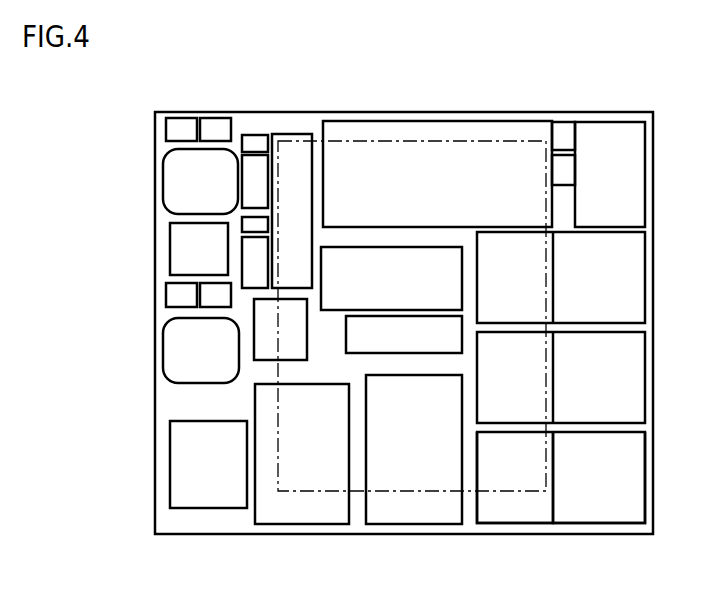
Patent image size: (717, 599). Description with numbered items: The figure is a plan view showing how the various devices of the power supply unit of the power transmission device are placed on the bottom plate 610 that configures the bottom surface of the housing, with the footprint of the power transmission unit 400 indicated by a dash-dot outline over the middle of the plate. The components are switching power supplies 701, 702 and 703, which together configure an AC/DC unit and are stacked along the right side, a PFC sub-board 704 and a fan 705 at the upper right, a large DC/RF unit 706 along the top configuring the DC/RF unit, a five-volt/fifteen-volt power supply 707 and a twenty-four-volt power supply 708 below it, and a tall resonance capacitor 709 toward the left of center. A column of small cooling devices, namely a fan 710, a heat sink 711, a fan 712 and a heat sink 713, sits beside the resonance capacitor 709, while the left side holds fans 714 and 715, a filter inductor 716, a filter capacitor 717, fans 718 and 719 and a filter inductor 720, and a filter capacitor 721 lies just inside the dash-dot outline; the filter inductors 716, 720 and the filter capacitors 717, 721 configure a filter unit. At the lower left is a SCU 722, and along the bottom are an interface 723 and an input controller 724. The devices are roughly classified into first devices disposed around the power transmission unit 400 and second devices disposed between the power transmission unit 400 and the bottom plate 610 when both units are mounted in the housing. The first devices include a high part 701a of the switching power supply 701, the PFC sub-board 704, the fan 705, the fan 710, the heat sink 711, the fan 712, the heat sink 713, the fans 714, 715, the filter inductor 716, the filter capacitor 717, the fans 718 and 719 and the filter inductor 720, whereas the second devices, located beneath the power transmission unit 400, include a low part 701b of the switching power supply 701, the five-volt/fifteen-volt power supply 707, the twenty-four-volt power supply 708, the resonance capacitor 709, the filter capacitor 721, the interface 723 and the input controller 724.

The power transmission unit 400 is at (465, 468).
The bottom plate 610 is at (613, 114).
The switching power supply 701 is at (620, 480).
The high part of switching power supply 701a is at (617, 505).
The low part of switching power supply 701b is at (541, 507).
The switching power supply 702 is at (620, 378).
The switching power supply 703 is at (620, 276).
The PFC sub-board 704 is at (620, 175).
The fan 705 is at (562, 132).
The DC/RF unit 706 is at (469, 157).
The 5V/15V power supply 707 is at (410, 278).
The 24V power supply 708 is at (377, 338).
The resonance capacitor 709 is at (293, 155).
The fan 710 is at (257, 143).
The heat sink 711 is at (257, 190).
The fan 712 is at (257, 226).
The heat sink 713 is at (257, 262).
The fan 714 is at (213, 128).
The fan 715 is at (180, 128).
The filter inductor 716 is at (190, 172).
The filter capacitor 717 is at (188, 253).
The fan 718 is at (185, 296).
The fan 719 is at (215, 295).
The filter inductor 720 is at (185, 357).
The filter capacitor 721 is at (275, 343).
The SCU 722 is at (185, 470).
The interface 723 is at (306, 508).
The input controller 724 is at (418, 507).